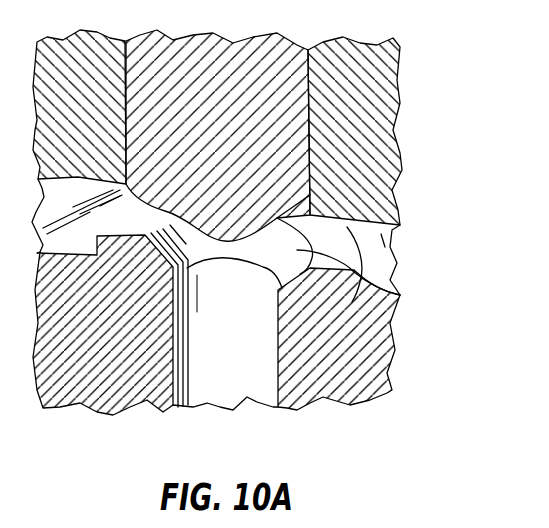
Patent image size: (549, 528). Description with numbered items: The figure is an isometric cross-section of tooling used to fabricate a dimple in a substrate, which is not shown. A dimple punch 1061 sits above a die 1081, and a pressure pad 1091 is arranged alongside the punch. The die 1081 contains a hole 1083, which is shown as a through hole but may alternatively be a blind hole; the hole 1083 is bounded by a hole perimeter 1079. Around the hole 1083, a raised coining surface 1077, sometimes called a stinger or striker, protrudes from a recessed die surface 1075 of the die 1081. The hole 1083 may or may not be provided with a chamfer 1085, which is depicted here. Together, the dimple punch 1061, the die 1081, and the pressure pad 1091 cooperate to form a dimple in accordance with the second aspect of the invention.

The dimple punch 1061 is at (247, 96).
The pressure pad 1091 is at (108, 88).
The die 1081 is at (137, 322).
The hole 1083 is at (247, 395).
The hole perimeter 1079 is at (333, 219).
The raised coining surface 1077 is at (323, 216).
The recessed die surface 1075 is at (386, 238).
The chamfer 1085 is at (395, 294).